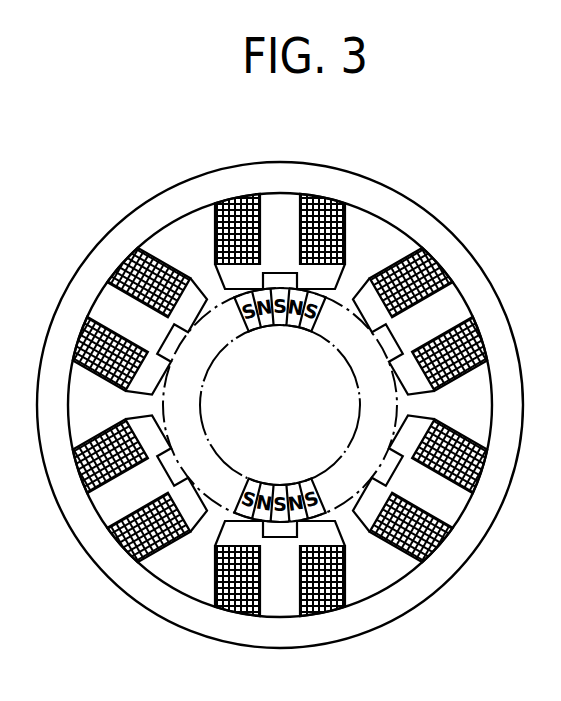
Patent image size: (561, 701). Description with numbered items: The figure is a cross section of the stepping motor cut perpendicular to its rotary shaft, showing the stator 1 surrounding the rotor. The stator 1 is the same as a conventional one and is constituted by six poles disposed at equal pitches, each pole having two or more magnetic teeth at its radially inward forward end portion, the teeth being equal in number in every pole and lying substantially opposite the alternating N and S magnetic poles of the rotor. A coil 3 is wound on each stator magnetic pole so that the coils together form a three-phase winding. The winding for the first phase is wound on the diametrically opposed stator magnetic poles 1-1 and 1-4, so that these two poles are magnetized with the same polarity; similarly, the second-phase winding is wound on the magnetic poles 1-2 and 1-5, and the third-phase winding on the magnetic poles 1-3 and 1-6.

The stator 1 is at (157, 198).
The coil 3 is at (407, 217).
The stator magnetic pole 1-1 is at (365, 231).
The stator magnetic pole 1-2 is at (421, 323).
The stator magnetic pole 1-3 is at (421, 487).
The stator magnetic pole 1-4 is at (280, 568).
The stator magnetic pole 1-5 is at (138, 487).
The stator magnetic pole 1-6 is at (138, 323).